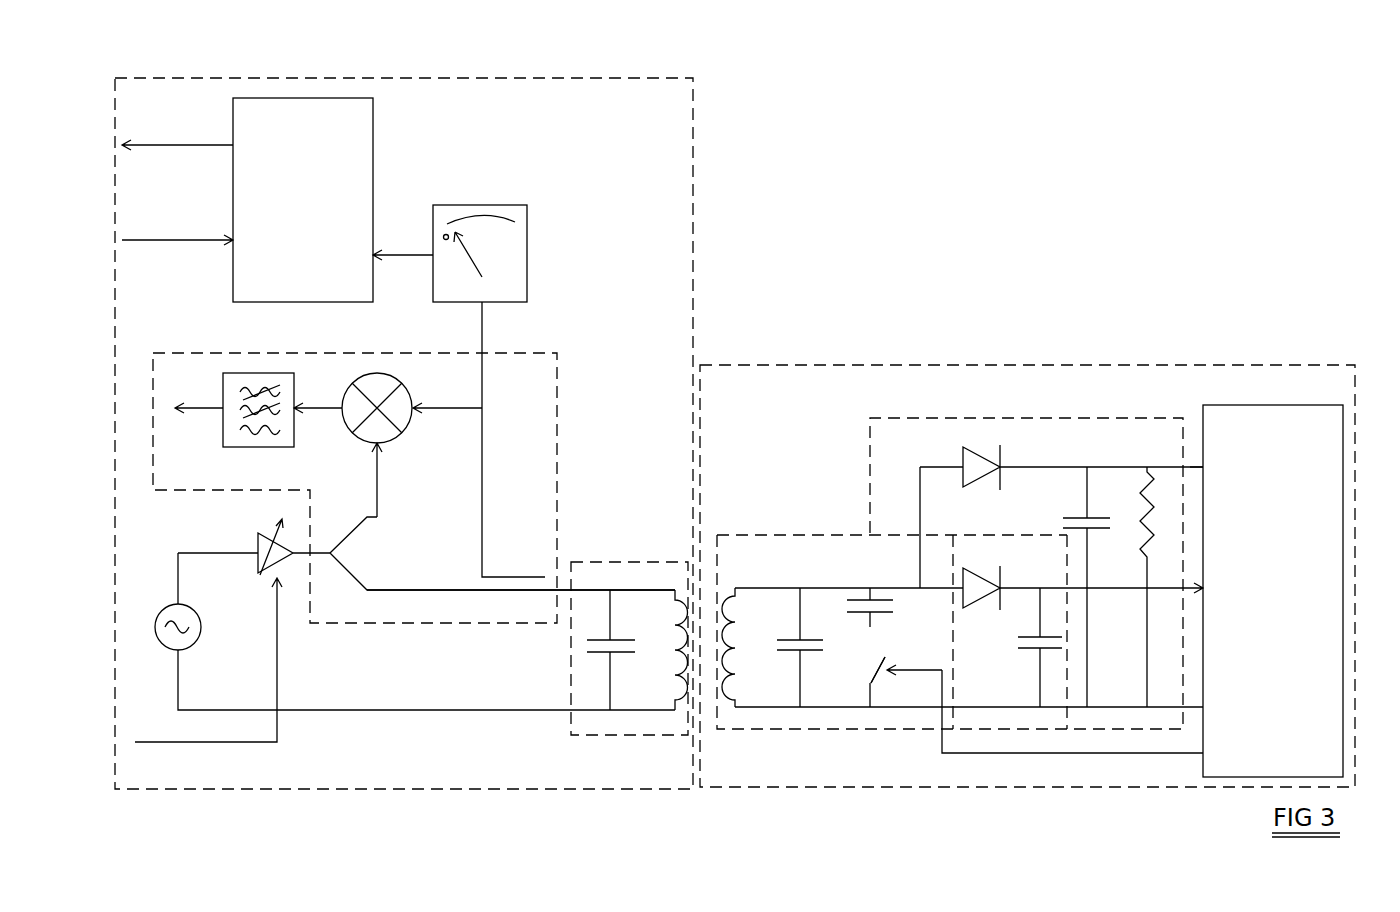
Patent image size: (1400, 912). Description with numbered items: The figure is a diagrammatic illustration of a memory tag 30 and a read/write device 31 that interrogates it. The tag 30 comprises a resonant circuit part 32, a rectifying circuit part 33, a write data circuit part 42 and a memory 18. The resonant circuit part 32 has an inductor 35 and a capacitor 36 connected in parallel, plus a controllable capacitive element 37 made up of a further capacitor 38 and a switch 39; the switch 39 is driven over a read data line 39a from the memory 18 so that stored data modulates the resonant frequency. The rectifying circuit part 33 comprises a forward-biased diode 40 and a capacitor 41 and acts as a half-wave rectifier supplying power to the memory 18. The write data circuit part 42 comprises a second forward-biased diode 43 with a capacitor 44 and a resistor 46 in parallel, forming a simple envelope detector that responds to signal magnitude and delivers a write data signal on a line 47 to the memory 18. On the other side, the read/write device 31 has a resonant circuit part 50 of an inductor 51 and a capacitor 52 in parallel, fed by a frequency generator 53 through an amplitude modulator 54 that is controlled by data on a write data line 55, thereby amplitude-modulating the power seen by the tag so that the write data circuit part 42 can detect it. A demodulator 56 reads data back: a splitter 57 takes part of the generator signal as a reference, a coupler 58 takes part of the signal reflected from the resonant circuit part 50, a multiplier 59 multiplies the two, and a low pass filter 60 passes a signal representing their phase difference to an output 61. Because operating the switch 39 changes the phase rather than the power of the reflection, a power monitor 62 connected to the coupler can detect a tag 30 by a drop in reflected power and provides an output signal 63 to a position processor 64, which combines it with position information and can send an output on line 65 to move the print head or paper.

The memory 18 is at (1333, 668).
The memory tag 30 is at (1016, 787).
The read/write device 31 is at (588, 75).
The resonant circuit part 32 is at (772, 730).
The rectifying circuit part 33 is at (993, 732).
The inductor L2 35 is at (723, 605).
The capacitor C2 36 is at (805, 653).
The controllable capacitive element 37 is at (870, 627).
The capacitor C3 38 is at (862, 597).
The switch S1 39 is at (873, 675).
The read data line 39a is at (1126, 755).
The diode D1 40 is at (985, 566).
The capacitor C4 41 is at (1043, 650).
The write data circuit part 42 is at (1153, 415).
The diode D2 43 is at (975, 448).
The capacitor C5 44 is at (1082, 517).
The resistor R1 46 is at (1147, 508).
The write data line 47 is at (1190, 467).
The resonant circuit part 50 is at (617, 735).
The inductor L1 51 is at (663, 708).
The capacitor C1 52 is at (603, 655).
The frequency generator 53 is at (160, 652).
The amplitude modulator 54 is at (281, 570).
The write data line 55 is at (228, 743).
The demodulator 56 is at (558, 393).
The splitter 57 is at (353, 580).
The coupler 58 is at (508, 590).
The multiplier 59 is at (405, 385).
The low pass filter 60 is at (202, 143).
The output 61 is at (185, 373).
The power monitor 62 is at (473, 205).
The output signal 63 is at (398, 250).
The position processor 64 is at (330, 98).
The line 65 is at (236, 373).